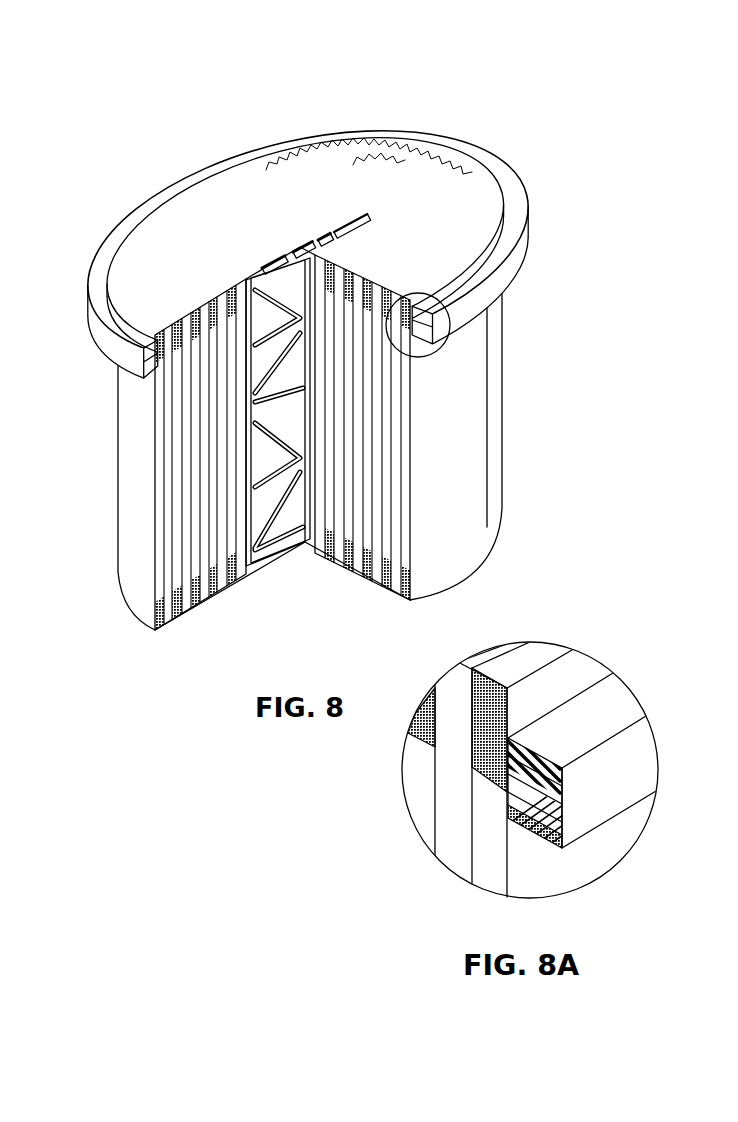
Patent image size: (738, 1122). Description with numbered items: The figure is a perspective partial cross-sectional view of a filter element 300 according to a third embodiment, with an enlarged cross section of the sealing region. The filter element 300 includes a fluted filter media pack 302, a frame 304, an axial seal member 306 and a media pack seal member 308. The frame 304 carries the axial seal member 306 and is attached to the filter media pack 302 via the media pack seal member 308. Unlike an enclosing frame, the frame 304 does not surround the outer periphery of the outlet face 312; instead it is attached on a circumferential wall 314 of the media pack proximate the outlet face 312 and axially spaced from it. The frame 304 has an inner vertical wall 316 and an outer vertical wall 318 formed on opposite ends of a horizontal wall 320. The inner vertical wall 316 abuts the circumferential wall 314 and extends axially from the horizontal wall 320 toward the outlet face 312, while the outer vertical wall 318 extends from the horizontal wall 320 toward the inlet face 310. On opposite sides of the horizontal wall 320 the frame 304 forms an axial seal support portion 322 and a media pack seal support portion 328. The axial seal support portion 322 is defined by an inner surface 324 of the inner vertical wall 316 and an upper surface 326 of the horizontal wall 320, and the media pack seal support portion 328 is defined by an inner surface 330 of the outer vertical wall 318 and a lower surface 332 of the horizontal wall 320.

In FIG. 8, the filter element 300 is at (111, 215).
In FIG. 8, the filter media pack 302 is at (503, 410).
In FIG. 8, the frame 304 is at (520, 268).
In FIG. 8A, the frame 304 is at (645, 779).
In FIG. 8, the axial seal member 306 is at (517, 213).
In FIG. 8A, the axial seal member 306 is at (600, 702).
In FIG. 8, the media pack seal member 308 is at (153, 379).
In FIG. 8A, the media pack seal member 308 is at (472, 860).
In FIG. 8, the inlet face 310 is at (208, 600).
In FIG. 8, the outlet face 312 is at (238, 192).
In FIG. 8A, the circumferential wall 314 is at (508, 725).
In FIG. 8A, the inner vertical wall 316 is at (508, 765).
In FIG. 8A, the outer vertical wall 318 is at (562, 838).
In FIG. 8A, the horizontal wall 320 is at (517, 812).
In FIG. 8A, the axial seal support portion 322 is at (560, 800).
In FIG. 8A, the inner surface 324 is at (538, 757).
In FIG. 8A, the upper surface 326 is at (545, 768).
In FIG. 8A, the media pack seal support portion 328 is at (508, 808).
In FIG. 8A, the inner surface 330 is at (562, 817).
In FIG. 8A, the lower surface 332 is at (525, 840).